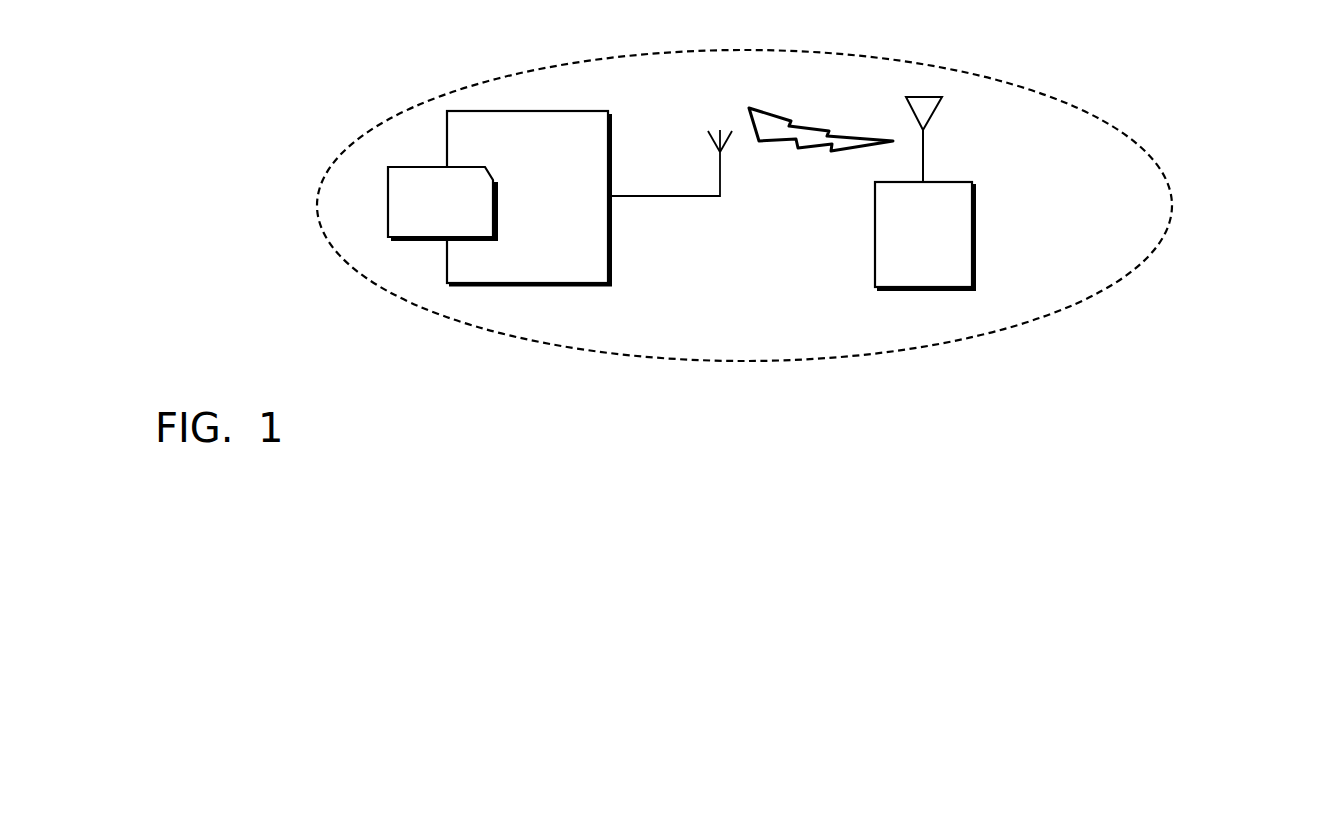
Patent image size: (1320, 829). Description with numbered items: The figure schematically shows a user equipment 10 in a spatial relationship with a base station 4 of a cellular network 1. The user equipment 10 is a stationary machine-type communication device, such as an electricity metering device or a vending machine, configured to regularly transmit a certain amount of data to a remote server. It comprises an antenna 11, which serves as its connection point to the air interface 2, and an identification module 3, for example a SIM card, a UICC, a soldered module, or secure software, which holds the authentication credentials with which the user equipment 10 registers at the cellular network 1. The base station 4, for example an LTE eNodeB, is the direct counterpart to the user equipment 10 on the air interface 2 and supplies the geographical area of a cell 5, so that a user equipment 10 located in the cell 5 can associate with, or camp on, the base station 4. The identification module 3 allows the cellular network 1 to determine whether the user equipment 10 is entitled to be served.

The cellular network 1 is at (1206, 152).
The air interface 2 is at (821, 148).
The identification module 3 is at (417, 182).
The base station 4 is at (924, 193).
The cell 5 is at (744, 205).
The user equipment 10 is at (528, 198).
The antenna 11 is at (672, 141).